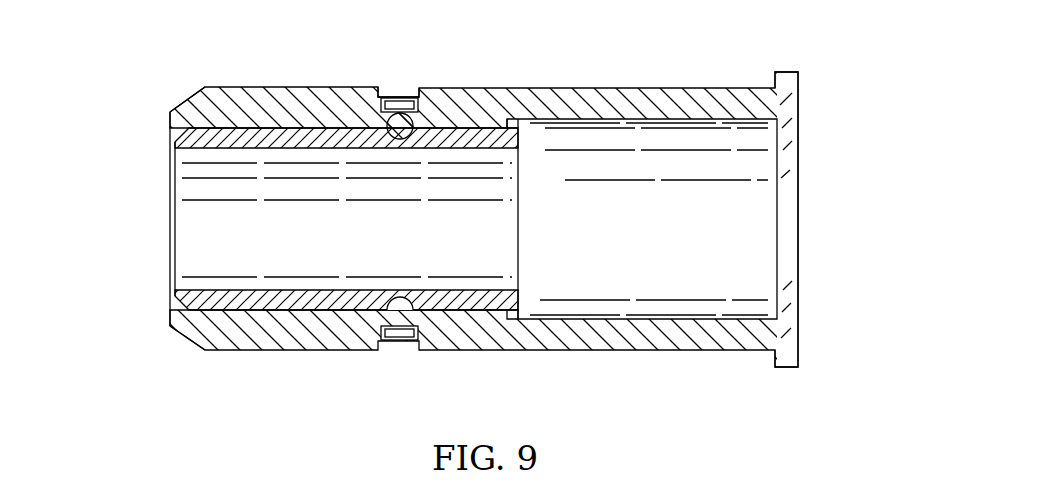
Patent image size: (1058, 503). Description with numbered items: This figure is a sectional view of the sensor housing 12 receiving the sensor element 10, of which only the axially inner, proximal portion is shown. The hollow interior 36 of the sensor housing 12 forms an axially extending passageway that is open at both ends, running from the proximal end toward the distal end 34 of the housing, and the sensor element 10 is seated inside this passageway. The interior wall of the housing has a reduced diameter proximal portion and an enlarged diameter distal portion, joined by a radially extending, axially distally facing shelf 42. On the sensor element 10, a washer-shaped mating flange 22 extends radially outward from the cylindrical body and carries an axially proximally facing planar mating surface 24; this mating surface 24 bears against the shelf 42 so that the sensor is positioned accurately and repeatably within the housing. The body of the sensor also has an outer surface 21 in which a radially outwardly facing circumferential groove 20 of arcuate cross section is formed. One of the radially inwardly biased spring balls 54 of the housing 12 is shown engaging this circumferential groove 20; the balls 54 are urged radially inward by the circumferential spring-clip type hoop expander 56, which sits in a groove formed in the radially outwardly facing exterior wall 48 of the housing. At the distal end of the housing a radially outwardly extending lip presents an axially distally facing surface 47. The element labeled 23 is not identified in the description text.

The sensor element 10 is at (338, 268).
The sensor housing 12 is at (643, 357).
The circumferential groove 20 is at (399, 300).
The outer surface 21 is at (215, 128).
The mating flange 22 is at (512, 128).
The pocket 23 is at (380, 102).
The mating surface 24 is at (505, 122).
The distal end 34 is at (827, 215).
The hollow interior 36 is at (152, 252).
The shelf 42 is at (520, 122).
The axially distally facing surface 47 is at (798, 88).
The exterior wall 48 is at (573, 90).
The sensor element-engaging balls 54 is at (385, 136).
The hoop expander 56 is at (383, 98).